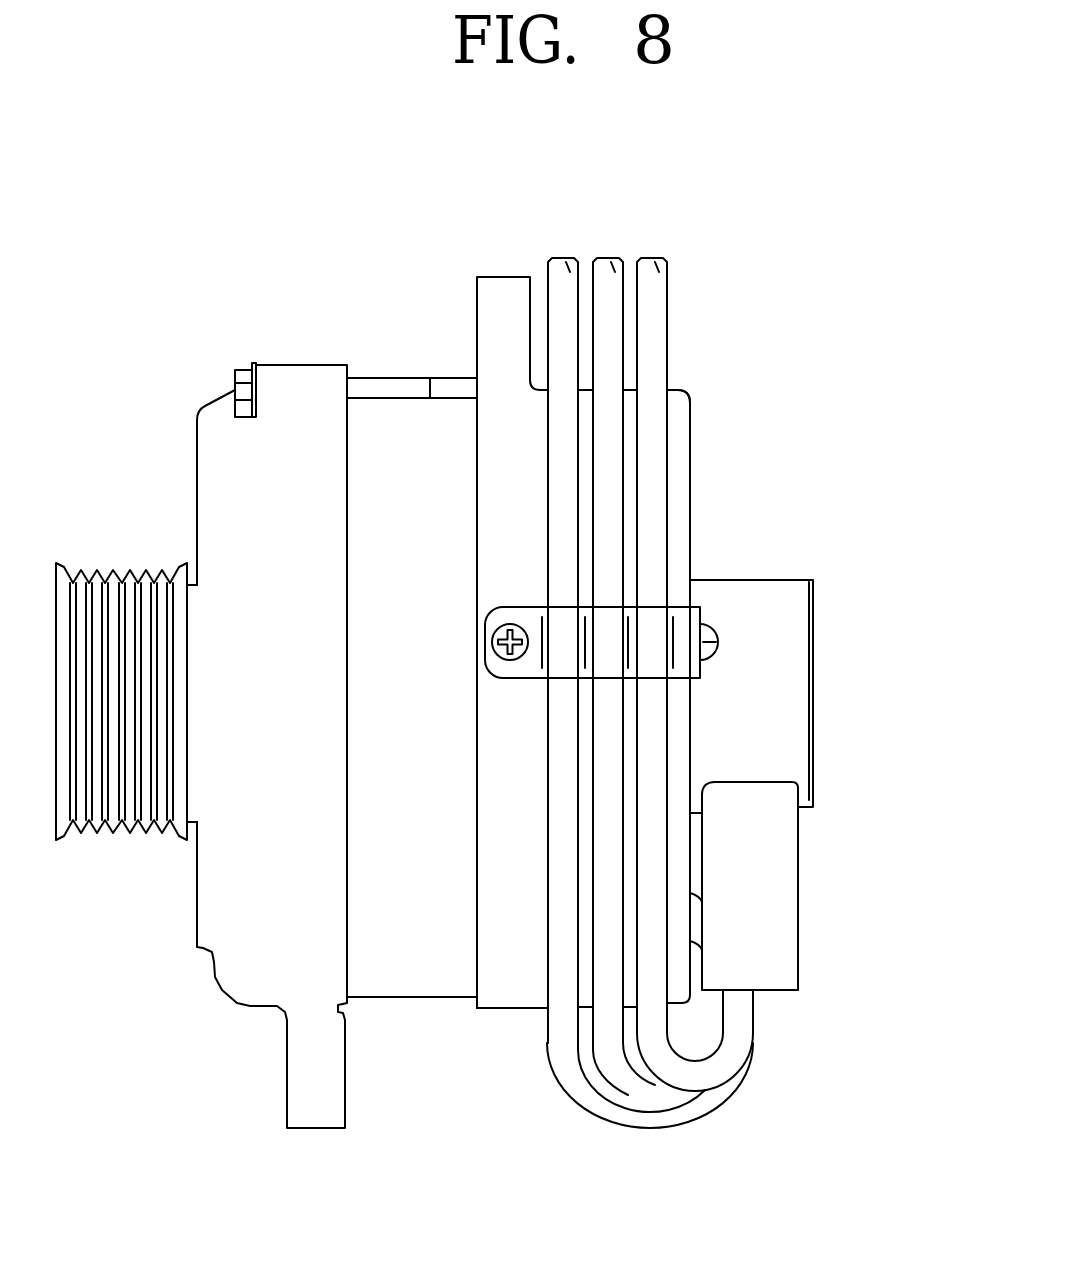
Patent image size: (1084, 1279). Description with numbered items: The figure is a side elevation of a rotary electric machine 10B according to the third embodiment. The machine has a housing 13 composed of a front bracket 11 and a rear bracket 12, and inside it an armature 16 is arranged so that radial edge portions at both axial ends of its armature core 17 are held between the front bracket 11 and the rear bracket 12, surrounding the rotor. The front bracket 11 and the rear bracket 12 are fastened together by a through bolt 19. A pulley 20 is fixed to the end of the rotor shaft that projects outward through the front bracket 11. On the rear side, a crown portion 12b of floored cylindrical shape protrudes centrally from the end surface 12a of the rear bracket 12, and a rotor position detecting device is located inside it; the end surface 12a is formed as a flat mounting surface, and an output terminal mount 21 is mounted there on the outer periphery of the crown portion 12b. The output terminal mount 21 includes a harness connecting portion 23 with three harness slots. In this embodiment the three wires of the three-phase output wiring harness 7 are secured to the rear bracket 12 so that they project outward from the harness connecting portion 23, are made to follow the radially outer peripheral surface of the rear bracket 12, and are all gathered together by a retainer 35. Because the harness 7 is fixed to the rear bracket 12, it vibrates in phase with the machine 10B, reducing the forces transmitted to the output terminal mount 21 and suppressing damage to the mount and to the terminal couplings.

The rotary electric machine 10B is at (242, 160).
The three-phase output wiring harness 7 is at (567, 257).
The front bracket 11 is at (214, 418).
The rear bracket 12 is at (679, 483).
The end surface 12a is at (693, 432).
The crown portion 12b is at (783, 617).
The housing 13 is at (196, 883).
The armature 16 is at (382, 973).
The armature core 17 is at (432, 980).
The through bolt 19 is at (393, 388).
The pulley 20 is at (118, 577).
The output terminal mount 21 is at (798, 965).
The harness connecting portion 23 is at (770, 883).
The retainer 35 is at (647, 643).